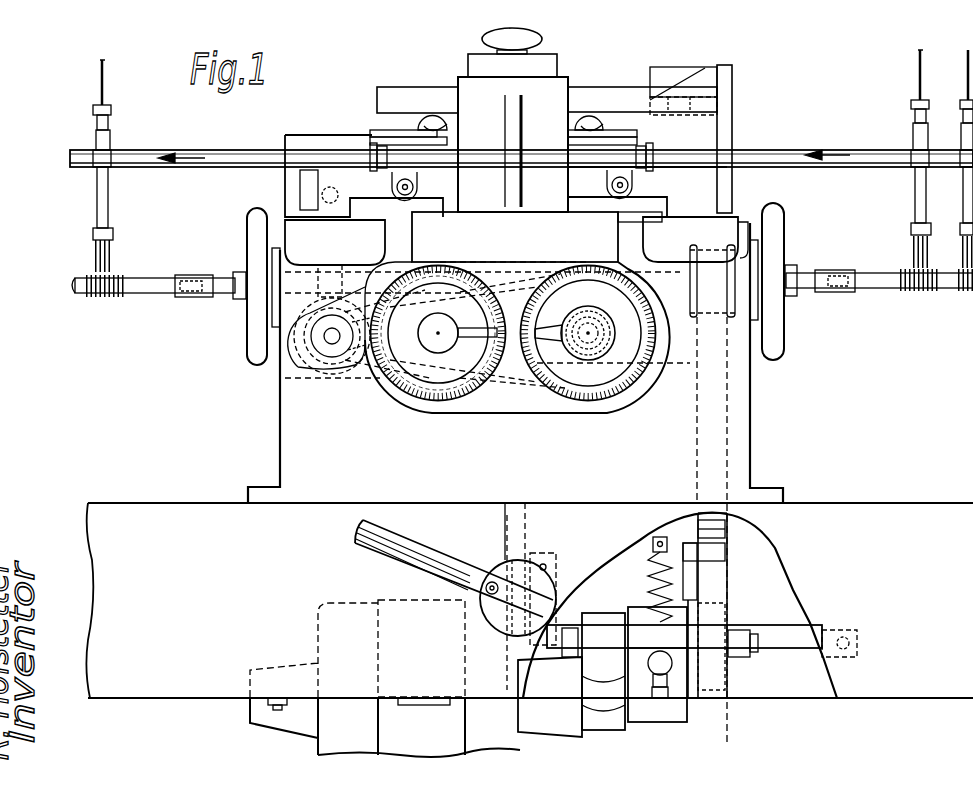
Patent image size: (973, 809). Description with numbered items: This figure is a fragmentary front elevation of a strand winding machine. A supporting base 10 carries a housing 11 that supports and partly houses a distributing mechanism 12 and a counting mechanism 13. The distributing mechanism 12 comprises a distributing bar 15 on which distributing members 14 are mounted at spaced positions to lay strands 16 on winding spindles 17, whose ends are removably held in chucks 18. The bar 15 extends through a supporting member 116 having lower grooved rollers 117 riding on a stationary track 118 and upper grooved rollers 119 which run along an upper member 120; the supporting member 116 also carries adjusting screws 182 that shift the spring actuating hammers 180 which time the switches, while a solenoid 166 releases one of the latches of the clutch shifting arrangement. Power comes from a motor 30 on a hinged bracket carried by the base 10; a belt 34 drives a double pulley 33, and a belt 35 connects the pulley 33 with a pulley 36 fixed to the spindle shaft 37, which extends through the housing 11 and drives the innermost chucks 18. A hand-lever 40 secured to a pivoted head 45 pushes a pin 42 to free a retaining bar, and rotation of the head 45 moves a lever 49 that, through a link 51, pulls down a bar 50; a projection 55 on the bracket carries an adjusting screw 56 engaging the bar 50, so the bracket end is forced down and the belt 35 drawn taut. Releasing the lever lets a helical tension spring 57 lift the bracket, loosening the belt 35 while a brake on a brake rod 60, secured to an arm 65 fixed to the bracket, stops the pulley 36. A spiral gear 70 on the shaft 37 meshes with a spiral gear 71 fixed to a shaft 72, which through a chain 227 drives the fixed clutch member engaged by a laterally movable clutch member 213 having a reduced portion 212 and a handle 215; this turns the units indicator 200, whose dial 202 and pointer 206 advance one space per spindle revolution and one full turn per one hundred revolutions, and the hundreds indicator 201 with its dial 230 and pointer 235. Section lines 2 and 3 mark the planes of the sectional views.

The section line 2- 2 is at (727, 743).
The section line 3- 3 is at (508, 683).
The supporting base 10 is at (888, 503).
The housing 11 is at (752, 382).
The distributing mechanism 12 is at (567, 62).
The counting mechanism 13 is at (397, 410).
The distributing members 14 is at (100, 195).
The distributing bar 15 is at (783, 148).
The strands 16 is at (105, 82).
The winding spindles 17 is at (165, 293).
The chucks 18 is at (198, 276).
The motor 30 is at (320, 614).
The double pulley 33 is at (733, 618).
The belt 34 is at (595, 720).
The belt 35 is at (728, 437).
The pulley 36 is at (750, 262).
The spindle shaft 37 is at (668, 295).
The hand-lever 40 is at (525, 485).
The pin 42 is at (477, 611).
The pivoted head 45 is at (522, 570).
The lever 49 is at (552, 617).
The bar 50 is at (772, 650).
The link 51 is at (560, 592).
The projection 55 is at (650, 662).
The adjusting screw 56 is at (652, 695).
The helical tension spring 57 is at (650, 591).
The brake rod 60 is at (735, 530).
The arm 65 is at (683, 543).
The spiral gear 70 is at (337, 272).
The spiral gear 71 is at (308, 362).
The shaft 72 is at (332, 345).
The distributing bar supporting member 116 is at (432, 150).
The lower grooved rollers 117 is at (393, 190).
The stationary track 118 is at (655, 213).
The upper grooved rollers 119 is at (420, 118).
The bar 120 is at (383, 90).
The solenoid 166 is at (688, 70).
The spring actuating hammers 180 is at (440, 128).
The adjusting screws 182 is at (368, 150).
The units indicator 200 is at (658, 372).
The hundreds indicator 201 is at (425, 410).
The dial 202 is at (613, 360).
The pointer 206 is at (550, 340).
The reduced portion 212 is at (355, 348).
The movable clutch member 213 is at (540, 283).
The handle 215 is at (617, 390).
The chain 227 is at (505, 395).
The dial 230 is at (335, 241).
The pointer 235 is at (475, 330).